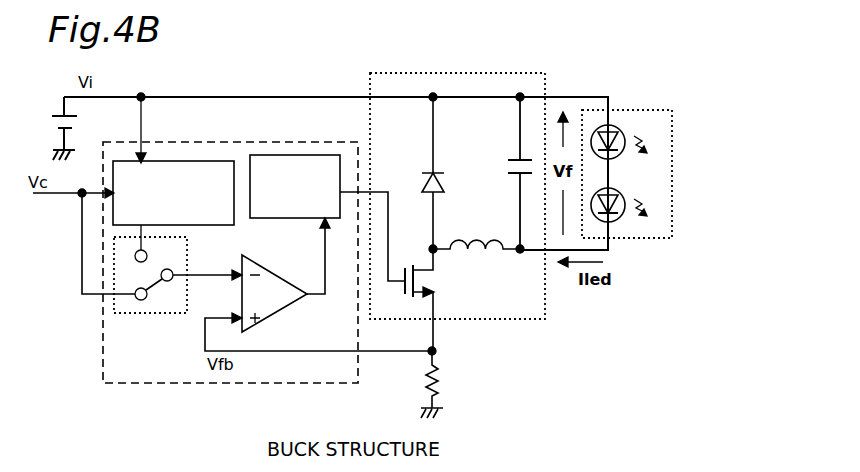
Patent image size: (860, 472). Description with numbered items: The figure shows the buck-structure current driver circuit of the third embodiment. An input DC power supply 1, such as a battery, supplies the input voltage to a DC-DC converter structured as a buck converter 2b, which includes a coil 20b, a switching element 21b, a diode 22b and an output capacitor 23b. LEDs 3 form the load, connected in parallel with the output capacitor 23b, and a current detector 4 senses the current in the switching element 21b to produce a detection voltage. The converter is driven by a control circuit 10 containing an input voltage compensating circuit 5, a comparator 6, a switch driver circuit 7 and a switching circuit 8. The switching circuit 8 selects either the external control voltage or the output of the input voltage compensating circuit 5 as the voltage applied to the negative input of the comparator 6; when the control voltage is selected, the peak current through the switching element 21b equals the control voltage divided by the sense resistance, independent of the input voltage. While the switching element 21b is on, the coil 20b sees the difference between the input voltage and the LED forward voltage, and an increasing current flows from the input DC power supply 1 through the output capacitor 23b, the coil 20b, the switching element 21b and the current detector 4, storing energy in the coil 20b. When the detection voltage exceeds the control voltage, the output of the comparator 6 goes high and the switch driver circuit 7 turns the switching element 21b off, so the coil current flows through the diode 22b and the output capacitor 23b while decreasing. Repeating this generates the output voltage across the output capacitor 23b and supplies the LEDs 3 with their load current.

The input DC power supply 1 is at (62, 108).
The buck converter 2b is at (486, 320).
The LEDs 3 is at (638, 110).
The current detector 4 is at (425, 376).
The input voltage compensating circuit 5 is at (190, 158).
The comparator 6 is at (275, 316).
The switch driver circuit 7 is at (292, 220).
The switching circuit 8 is at (150, 314).
The control circuit 10 is at (196, 383).
The coil 20b is at (468, 240).
The switching element 21b is at (420, 266).
The diode 22b is at (424, 170).
The output capacitor 23b is at (506, 165).